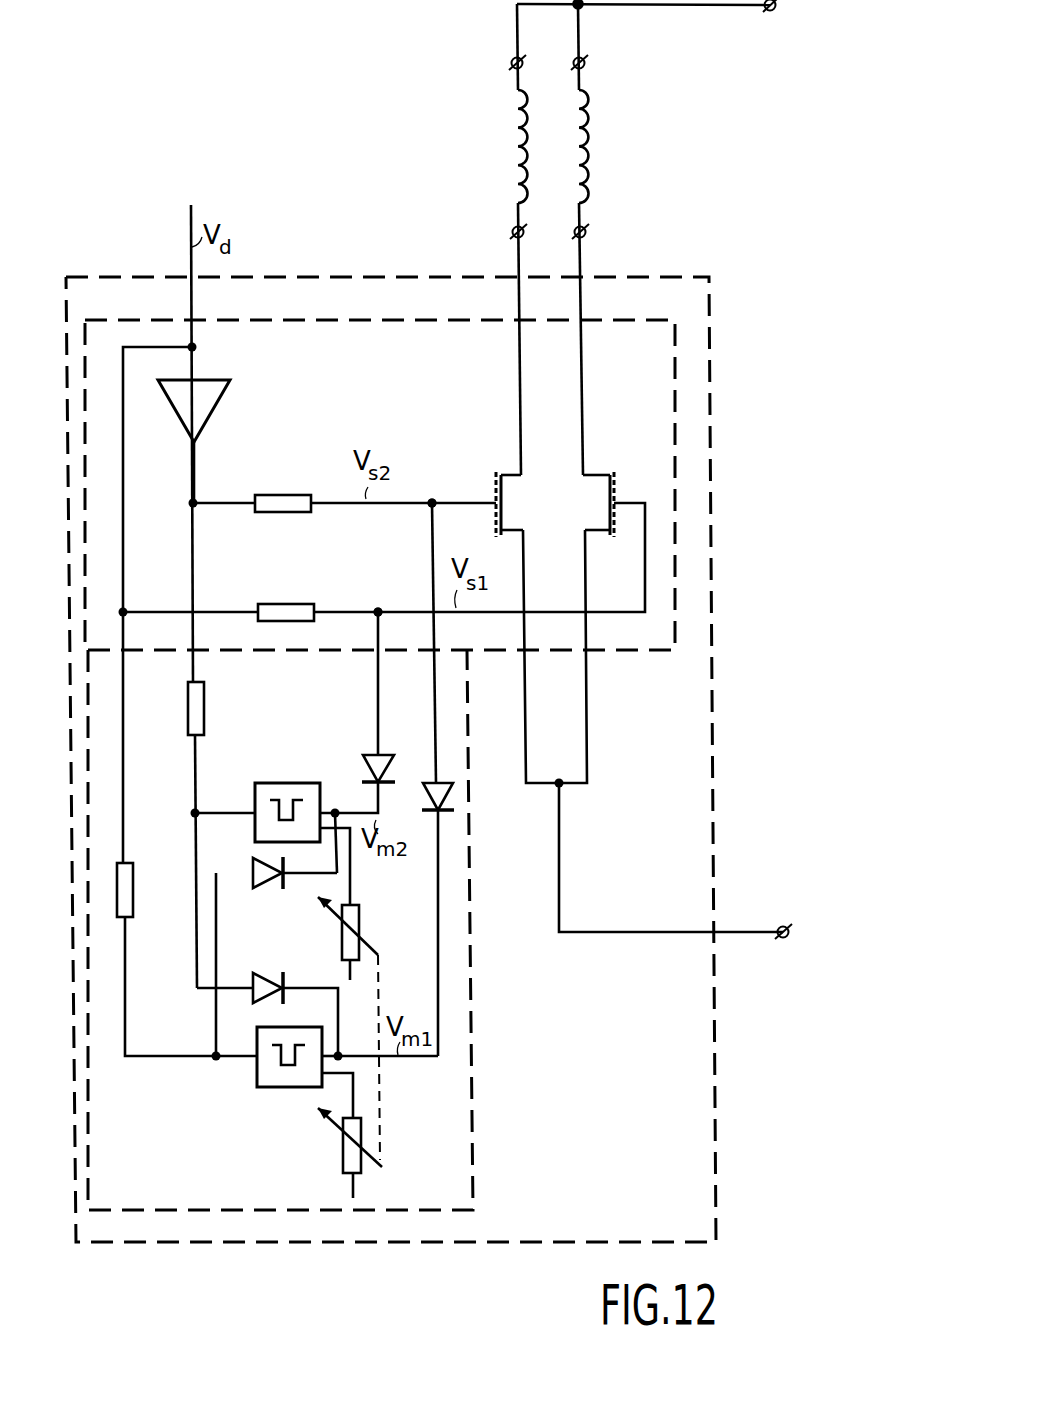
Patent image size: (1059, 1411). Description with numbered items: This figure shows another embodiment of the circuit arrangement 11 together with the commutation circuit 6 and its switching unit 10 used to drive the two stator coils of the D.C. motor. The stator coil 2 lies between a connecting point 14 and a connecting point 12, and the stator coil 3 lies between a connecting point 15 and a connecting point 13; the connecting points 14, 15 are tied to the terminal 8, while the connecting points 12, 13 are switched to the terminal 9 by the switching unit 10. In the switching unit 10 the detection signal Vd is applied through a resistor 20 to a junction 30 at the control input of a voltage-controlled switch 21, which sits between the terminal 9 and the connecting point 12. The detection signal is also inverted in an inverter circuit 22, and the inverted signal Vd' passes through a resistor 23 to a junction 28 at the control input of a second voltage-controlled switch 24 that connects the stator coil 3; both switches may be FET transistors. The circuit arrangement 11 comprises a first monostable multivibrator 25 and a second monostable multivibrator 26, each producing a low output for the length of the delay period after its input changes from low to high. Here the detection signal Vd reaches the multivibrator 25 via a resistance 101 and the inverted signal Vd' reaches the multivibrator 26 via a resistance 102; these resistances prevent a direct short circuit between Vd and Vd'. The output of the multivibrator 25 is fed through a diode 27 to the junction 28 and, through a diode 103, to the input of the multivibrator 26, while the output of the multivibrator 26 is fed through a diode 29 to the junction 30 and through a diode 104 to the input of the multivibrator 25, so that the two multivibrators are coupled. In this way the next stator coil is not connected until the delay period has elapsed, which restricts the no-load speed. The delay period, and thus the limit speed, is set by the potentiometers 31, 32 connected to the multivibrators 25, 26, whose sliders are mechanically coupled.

The stator coil 2 is at (515, 142).
The stator coil 3 is at (589, 142).
The commutation circuit 6 is at (409, 275).
The terminal 8 is at (776, 10).
The terminal 9 is at (789, 936).
The switching unit 10 is at (290, 319).
The circuit arrangement 11 is at (474, 1191).
The connecting point 12 is at (511, 232).
The connecting point 13 is at (587, 232).
The connecting point 14 is at (511, 63).
The connecting point 15 is at (586, 63).
The resistor 20 is at (290, 606).
The voltage-controlled switch 21 is at (608, 503).
The inverter circuit 22 is at (216, 409).
The resistor 23 is at (287, 498).
The voltage-controlled switch 24 is at (503, 498).
The first monostable multivibrator 25 is at (273, 1088).
The second monostable multivibrator 26 is at (275, 782).
The diode 27 is at (427, 784).
The junction 28 is at (430, 499).
The diode 29 is at (364, 758).
The junction 30 is at (378, 608).
The potentiometer 31 is at (360, 917).
The potentiometer 32 is at (342, 1158).
The resistance 101 is at (131, 891).
The resistance 102 is at (201, 690).
The diode 103 is at (265, 981).
The diode 104 is at (264, 882).